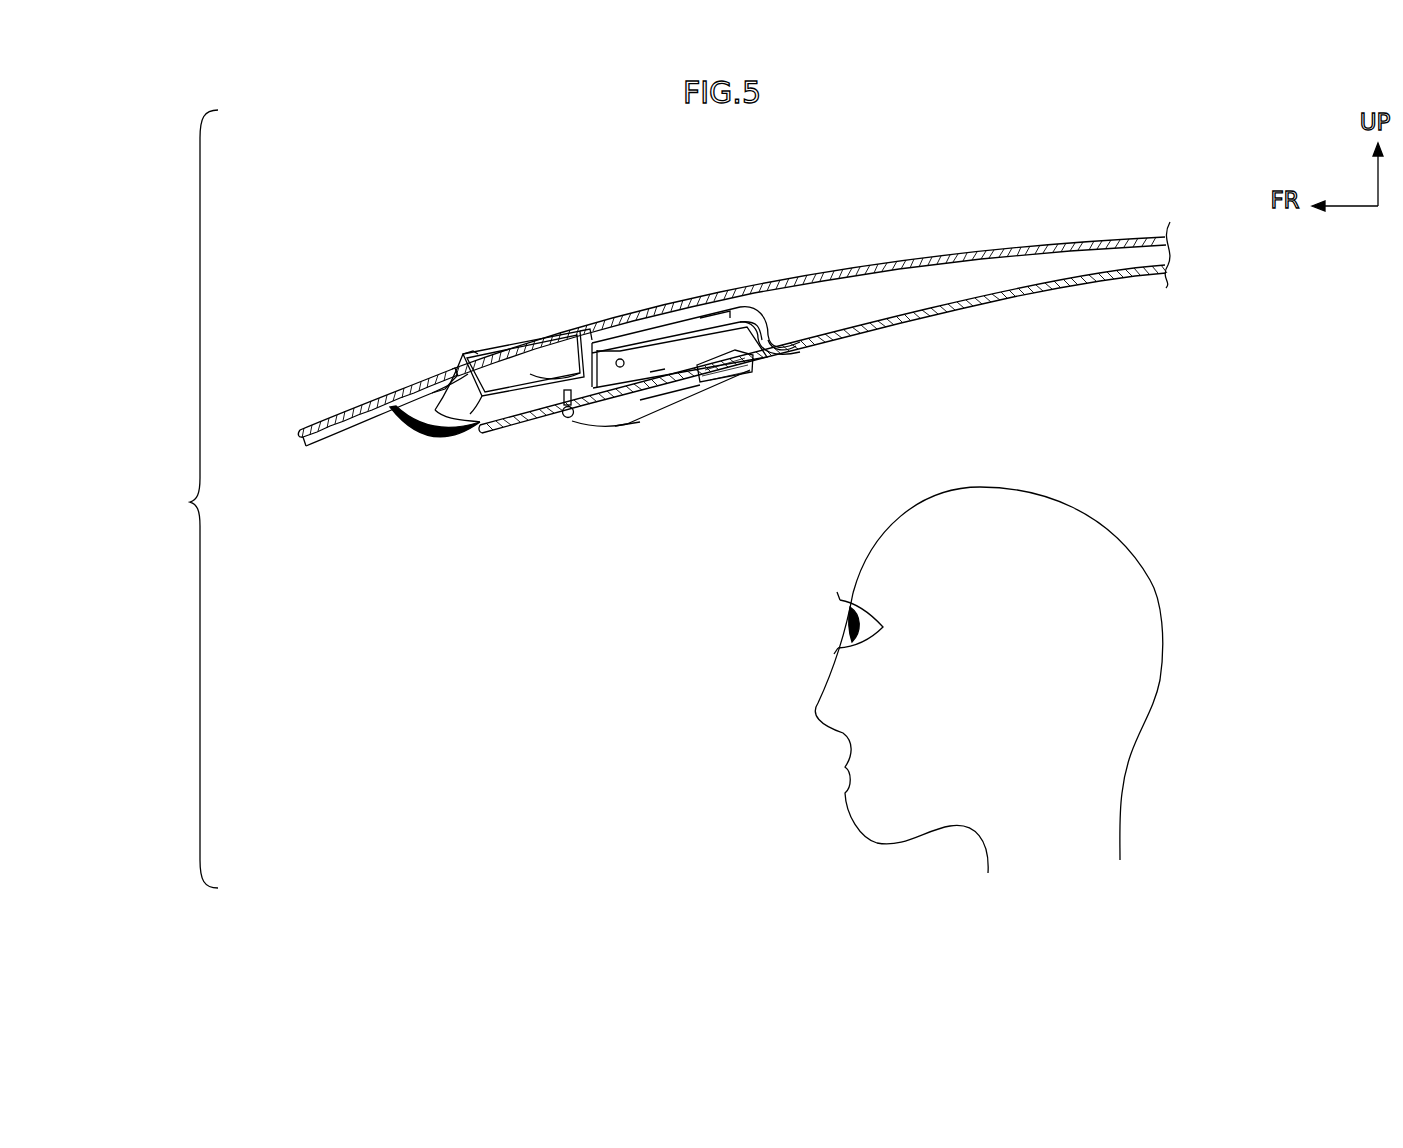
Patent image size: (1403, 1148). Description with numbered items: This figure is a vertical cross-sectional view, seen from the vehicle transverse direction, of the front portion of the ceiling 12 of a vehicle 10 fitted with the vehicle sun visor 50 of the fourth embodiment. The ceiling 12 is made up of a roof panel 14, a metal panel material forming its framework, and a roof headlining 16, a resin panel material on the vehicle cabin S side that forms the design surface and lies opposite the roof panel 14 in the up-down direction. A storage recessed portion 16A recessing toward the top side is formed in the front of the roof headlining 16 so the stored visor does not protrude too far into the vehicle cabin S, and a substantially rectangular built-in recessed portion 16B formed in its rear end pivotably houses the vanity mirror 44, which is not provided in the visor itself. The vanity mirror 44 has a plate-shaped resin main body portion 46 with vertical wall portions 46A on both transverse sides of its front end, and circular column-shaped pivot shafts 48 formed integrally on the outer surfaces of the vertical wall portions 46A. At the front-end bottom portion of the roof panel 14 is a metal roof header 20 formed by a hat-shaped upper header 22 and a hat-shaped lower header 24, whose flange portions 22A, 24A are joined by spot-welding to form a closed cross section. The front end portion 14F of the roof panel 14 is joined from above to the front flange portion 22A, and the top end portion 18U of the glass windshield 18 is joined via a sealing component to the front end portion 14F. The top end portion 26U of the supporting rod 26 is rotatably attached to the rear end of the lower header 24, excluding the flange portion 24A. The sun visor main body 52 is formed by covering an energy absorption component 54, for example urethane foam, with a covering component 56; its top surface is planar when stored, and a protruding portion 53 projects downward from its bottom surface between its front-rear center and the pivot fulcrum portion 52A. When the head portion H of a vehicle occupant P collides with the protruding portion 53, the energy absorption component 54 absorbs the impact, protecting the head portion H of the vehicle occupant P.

The vehicle 10 is at (1020, 222).
The ceiling 12 is at (877, 261).
The roof panel 14 is at (952, 254).
The front end portion of the roof panel 14F is at (451, 365).
The roof headlining 16 is at (882, 322).
The storage recessed portion 16A is at (493, 426).
The built-in recessed portion 16B is at (748, 330).
The glass windshield 18 is at (320, 420).
The top end portion of the glass windshield 18U is at (458, 358).
The roof header 20 is at (477, 395).
The upper header 22 is at (587, 326).
The flange portion of the upper header 22A is at (424, 377).
The lower header 24 is at (460, 401).
The flange portion of the lower header 24A is at (418, 423).
The supporting rod 26 is at (550, 421).
The top end portion of the supporting rod 26U is at (540, 377).
The vanity mirror 44 is at (715, 311).
The main body portion 46 is at (762, 331).
The vertical wall portions 46A is at (656, 380).
The pivot shafts 48 is at (611, 378).
The vehicle sun visor 50 is at (677, 410).
The sun visor main body 52 is at (681, 390).
The pivot fulcrum portion 52A is at (558, 420).
The protruding portion 53 is at (627, 429).
The energy absorption component 54 is at (754, 367).
The covering component 56 is at (775, 353).
The vehicle cabin S is at (1077, 388).
The head portion H is at (1066, 523).
The vehicle occupant P is at (1156, 600).